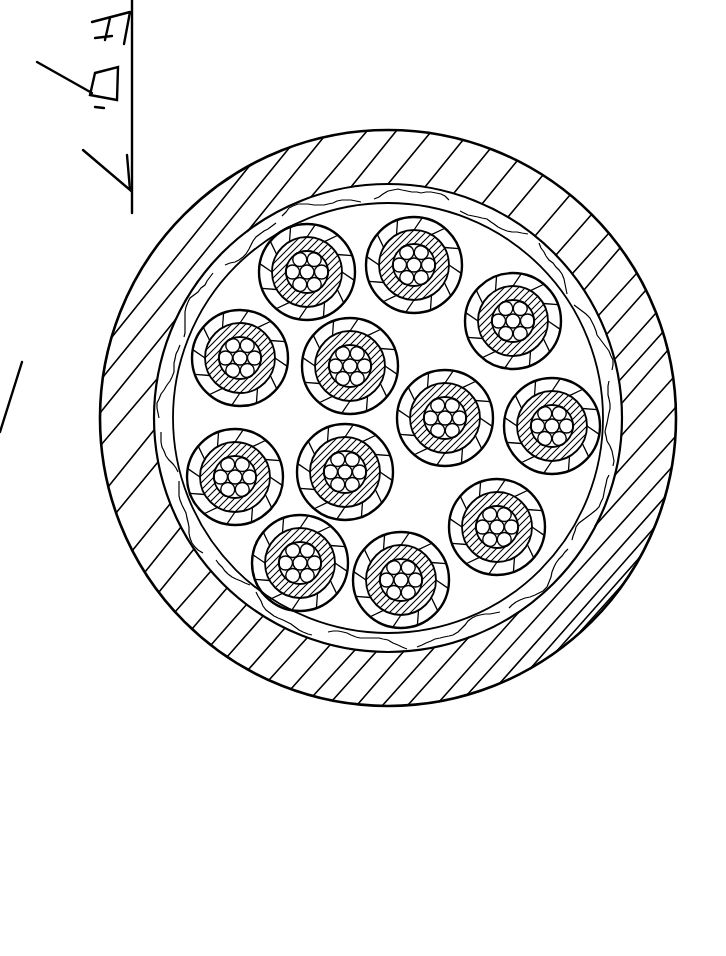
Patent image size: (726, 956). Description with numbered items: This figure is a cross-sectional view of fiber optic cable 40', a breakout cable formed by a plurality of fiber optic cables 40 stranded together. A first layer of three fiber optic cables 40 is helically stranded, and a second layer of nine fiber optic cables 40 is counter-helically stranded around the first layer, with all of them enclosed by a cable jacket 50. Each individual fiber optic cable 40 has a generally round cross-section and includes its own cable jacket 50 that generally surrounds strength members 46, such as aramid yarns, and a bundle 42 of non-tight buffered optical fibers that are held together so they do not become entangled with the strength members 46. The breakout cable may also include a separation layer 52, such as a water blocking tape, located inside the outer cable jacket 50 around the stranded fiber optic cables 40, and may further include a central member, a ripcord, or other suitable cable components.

The fiber optic cable 40' is at (408, 379).
The fiber optic cable 40 is at (528, 611).
The bundle 42 is at (418, 247).
The strength members 46 is at (437, 245).
The cable jacket 50 is at (476, 562).
The separation layer 52 is at (312, 637).